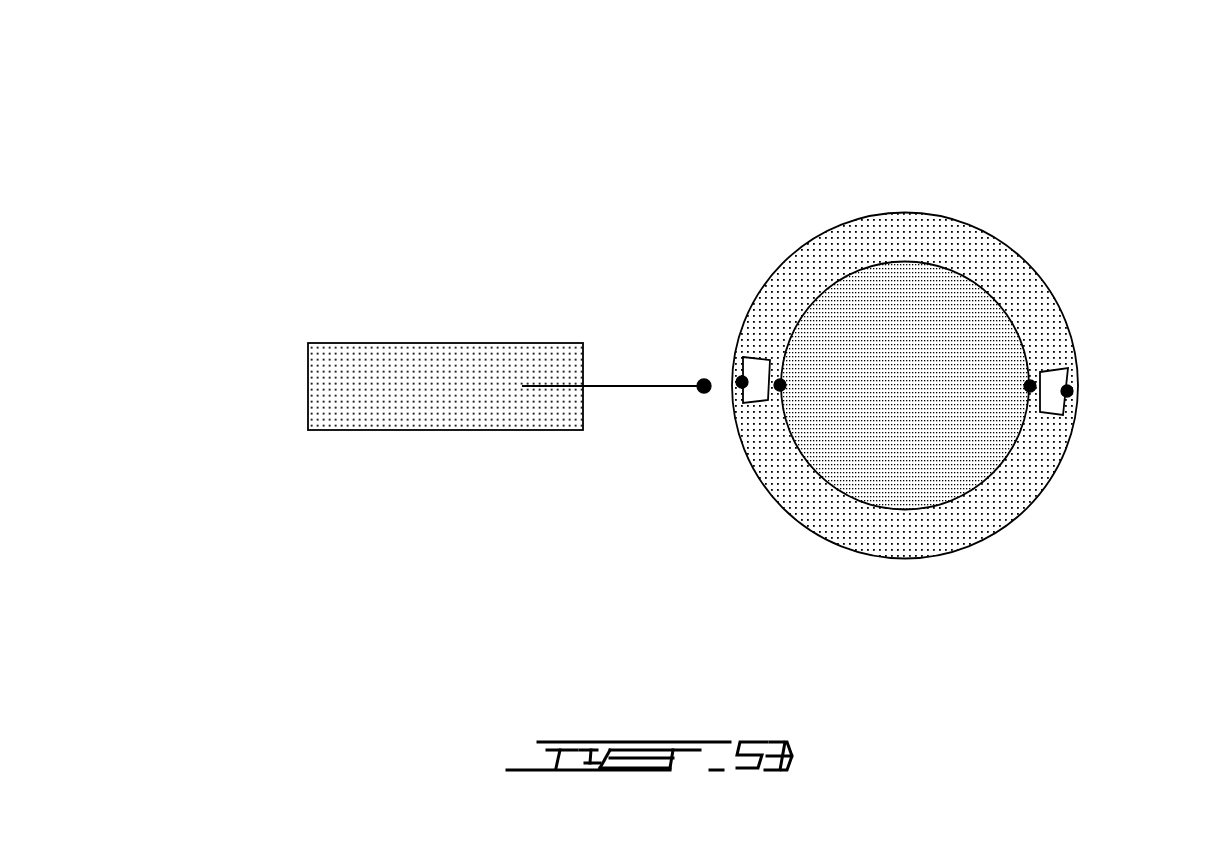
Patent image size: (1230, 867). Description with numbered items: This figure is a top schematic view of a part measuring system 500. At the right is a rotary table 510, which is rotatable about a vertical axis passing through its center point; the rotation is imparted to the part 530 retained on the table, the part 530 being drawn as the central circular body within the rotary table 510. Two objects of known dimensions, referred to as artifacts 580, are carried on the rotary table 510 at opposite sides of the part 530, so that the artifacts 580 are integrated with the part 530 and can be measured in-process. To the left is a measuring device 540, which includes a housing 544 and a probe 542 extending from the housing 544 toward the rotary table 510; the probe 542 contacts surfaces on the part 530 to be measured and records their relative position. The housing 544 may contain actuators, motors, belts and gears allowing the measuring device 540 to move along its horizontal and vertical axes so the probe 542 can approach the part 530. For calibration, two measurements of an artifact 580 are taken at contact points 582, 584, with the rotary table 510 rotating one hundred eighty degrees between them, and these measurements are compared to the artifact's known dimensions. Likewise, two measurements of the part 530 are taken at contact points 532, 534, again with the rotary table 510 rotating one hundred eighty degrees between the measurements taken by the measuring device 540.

The part measuring system 500 is at (250, 138).
The rotary table 510 is at (980, 250).
The part 530 is at (980, 322).
The contact point 532 is at (780, 390).
The contact point 534 is at (1030, 390).
The measuring device 540 is at (407, 341).
The probe 542 is at (642, 370).
The housing 544 is at (430, 365).
The artifact 580 is at (757, 368).
The contact point 582 is at (742, 386).
The contact point 584 is at (1073, 392).